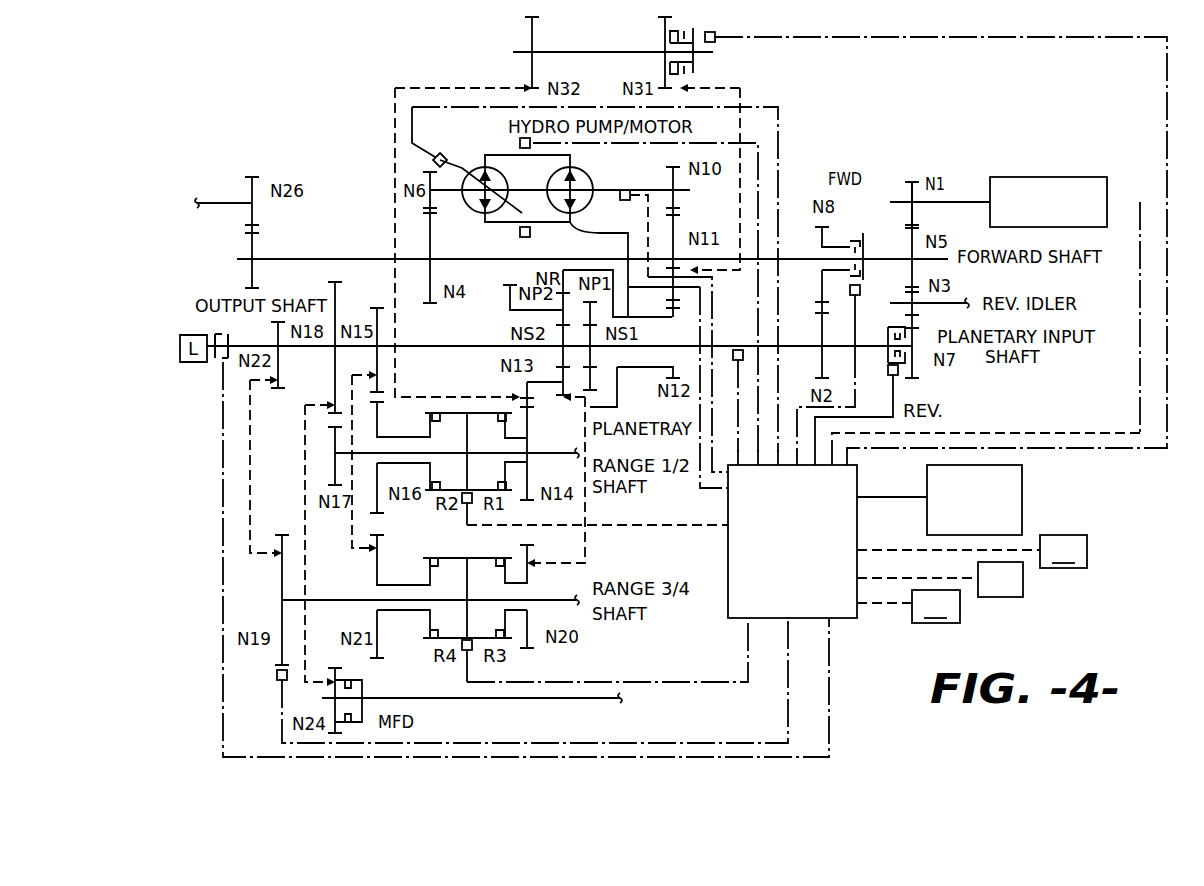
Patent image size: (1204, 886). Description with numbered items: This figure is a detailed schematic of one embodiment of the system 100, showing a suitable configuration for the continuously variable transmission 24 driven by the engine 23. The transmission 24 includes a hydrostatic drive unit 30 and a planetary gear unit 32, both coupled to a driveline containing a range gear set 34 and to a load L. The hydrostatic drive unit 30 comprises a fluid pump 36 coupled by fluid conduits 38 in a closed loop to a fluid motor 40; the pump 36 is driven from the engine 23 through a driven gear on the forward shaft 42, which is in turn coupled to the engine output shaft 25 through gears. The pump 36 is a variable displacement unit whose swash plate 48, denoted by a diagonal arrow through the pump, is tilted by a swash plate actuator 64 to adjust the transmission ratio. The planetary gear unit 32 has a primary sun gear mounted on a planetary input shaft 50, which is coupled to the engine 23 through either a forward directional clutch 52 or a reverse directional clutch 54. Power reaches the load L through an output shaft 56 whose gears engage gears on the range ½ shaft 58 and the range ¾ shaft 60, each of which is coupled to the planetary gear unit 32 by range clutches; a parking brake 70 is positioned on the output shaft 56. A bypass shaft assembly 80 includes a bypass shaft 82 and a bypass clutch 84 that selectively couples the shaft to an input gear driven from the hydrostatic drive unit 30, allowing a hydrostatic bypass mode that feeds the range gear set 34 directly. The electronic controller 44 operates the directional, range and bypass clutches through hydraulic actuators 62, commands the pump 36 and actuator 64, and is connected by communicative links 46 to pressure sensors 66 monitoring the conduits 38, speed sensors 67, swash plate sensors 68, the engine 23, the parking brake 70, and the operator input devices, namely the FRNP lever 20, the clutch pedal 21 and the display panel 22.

The system 100 is at (255, 117).
The hydrostatic drive unit 30 is at (405, 150).
The swash plate actuator 64 is at (434, 160).
The forward shaft 42 is at (304, 259).
The swash plate 48 is at (462, 200).
The fluid pump 36 is at (480, 218).
The fluid motor 40 is at (589, 188).
The fluid conduits 38 is at (578, 167).
The pressure sensors 66 is at (520, 141).
The swash plate sensors 68 is at (620, 212).
The bypass shaft assembly 80 is at (508, 32).
The bypass shaft 82 is at (593, 52).
The bypass clutch 84 is at (702, 60).
The hydraulic actuators 62 is at (715, 42).
The communicative link 46 is at (760, 162).
The range gear set 34 is at (610, 538).
The transmission 24 is at (963, 149).
The engine 23 is at (1107, 185).
The output shaft 25 is at (917, 205).
The forward directional clutch 52 is at (852, 232).
The reverse directional clutch 54 is at (903, 350).
The planetary input shaft 50 is at (650, 346).
The planetary gear unit 32 is at (480, 356).
The range ½ shaft 58 is at (540, 453).
The parking brake 70 is at (228, 335).
The output shaft 56 is at (318, 354).
The range ¾ shaft 60 is at (320, 600).
The controller 44 is at (860, 537).
The FRNP lever 20 is at (1028, 496).
The clutch pedal 21 is at (1028, 496).
The display panel 22 is at (1023, 503).
The speed sensors 67 is at (1011, 591).